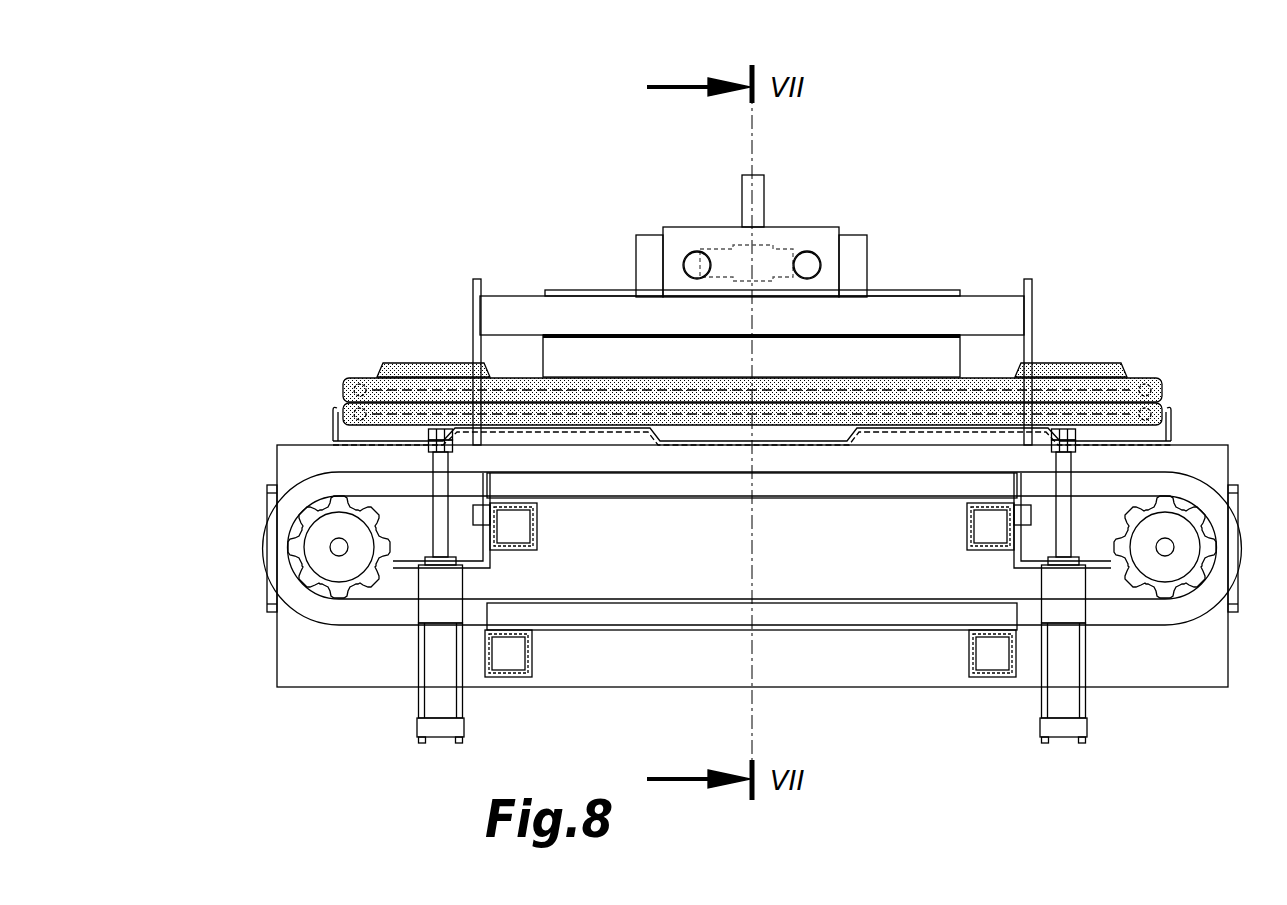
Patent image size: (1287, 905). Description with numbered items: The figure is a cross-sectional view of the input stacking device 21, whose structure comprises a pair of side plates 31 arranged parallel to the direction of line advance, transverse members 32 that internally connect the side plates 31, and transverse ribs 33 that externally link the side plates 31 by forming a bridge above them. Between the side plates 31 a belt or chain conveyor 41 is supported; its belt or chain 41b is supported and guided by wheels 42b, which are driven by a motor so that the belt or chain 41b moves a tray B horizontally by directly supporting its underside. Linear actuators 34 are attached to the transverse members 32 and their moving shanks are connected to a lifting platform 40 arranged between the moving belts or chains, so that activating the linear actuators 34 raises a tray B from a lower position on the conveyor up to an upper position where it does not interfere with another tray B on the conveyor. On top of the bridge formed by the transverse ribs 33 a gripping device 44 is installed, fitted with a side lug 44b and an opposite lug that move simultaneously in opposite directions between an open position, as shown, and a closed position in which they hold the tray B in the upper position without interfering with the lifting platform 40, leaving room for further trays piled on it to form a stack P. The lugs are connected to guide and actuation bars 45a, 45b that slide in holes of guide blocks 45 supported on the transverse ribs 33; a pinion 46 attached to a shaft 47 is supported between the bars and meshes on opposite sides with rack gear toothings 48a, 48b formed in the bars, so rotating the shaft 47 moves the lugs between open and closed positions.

The input stacking device 21 is at (1054, 128).
The side plates 31 is at (1208, 672).
The transverse members 32 is at (537, 550).
The transverse ribs 33 is at (473, 300).
The linear actuators 34 is at (427, 693).
The lifting platform 40 is at (880, 432).
The belt or chain conveyor 41 is at (333, 655).
The belt or chain 41b is at (308, 483).
The wheels 42b is at (297, 522).
The gripping device 44 is at (847, 180).
The side lug 44b is at (587, 363).
The guide blocks 45 is at (712, 233).
The guide and actuation bar 45a is at (690, 270).
The guide and actuation bar 45b is at (815, 272).
The pinion 46 is at (775, 238).
The shaft 47 is at (762, 186).
The rack gear toothing 48a is at (696, 256).
The rack gear toothing 48b is at (808, 256).
The stack P is at (398, 346).
The tray B is at (1065, 388).